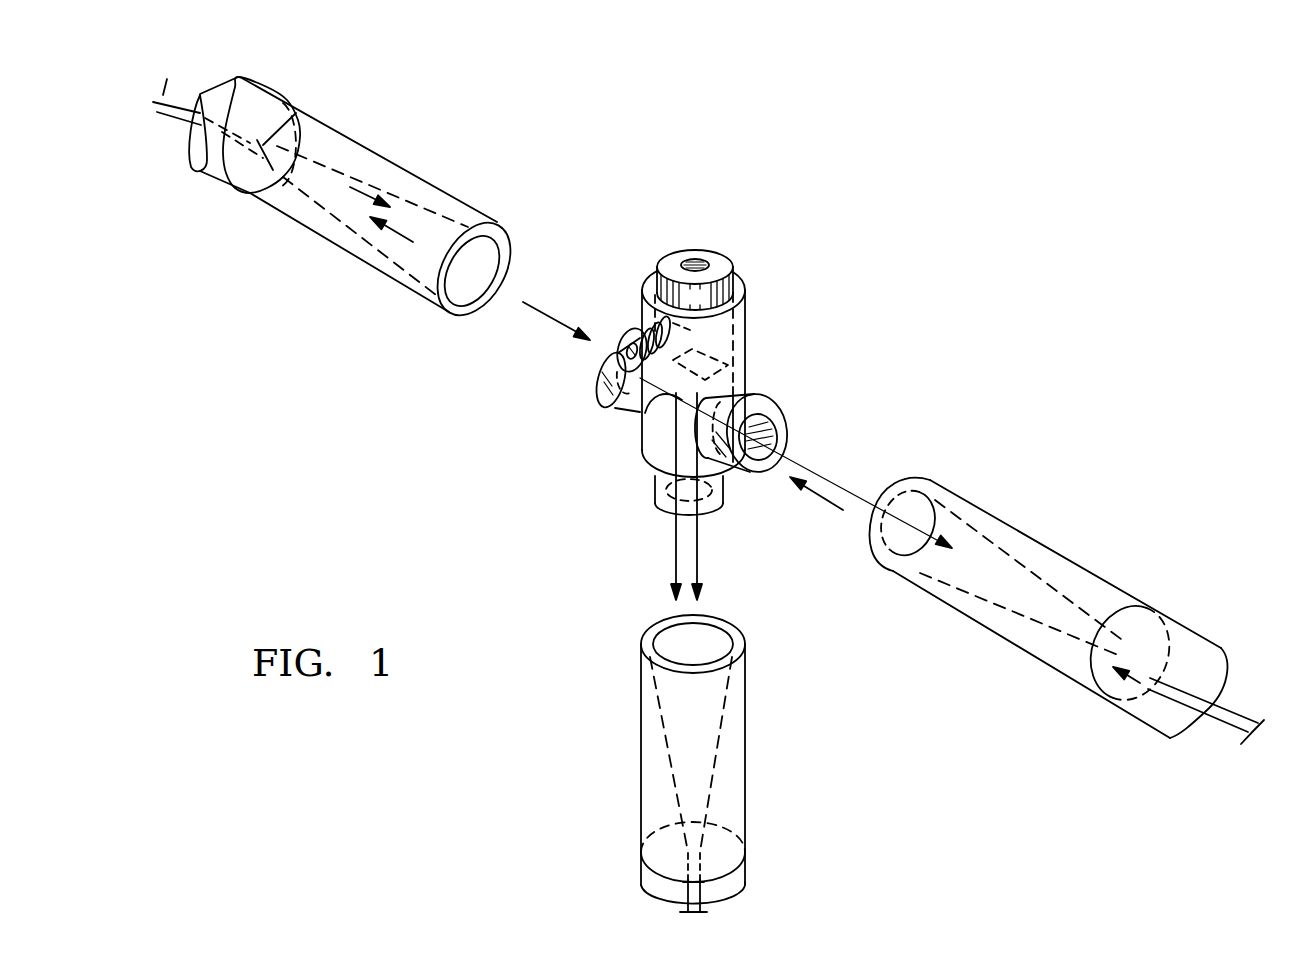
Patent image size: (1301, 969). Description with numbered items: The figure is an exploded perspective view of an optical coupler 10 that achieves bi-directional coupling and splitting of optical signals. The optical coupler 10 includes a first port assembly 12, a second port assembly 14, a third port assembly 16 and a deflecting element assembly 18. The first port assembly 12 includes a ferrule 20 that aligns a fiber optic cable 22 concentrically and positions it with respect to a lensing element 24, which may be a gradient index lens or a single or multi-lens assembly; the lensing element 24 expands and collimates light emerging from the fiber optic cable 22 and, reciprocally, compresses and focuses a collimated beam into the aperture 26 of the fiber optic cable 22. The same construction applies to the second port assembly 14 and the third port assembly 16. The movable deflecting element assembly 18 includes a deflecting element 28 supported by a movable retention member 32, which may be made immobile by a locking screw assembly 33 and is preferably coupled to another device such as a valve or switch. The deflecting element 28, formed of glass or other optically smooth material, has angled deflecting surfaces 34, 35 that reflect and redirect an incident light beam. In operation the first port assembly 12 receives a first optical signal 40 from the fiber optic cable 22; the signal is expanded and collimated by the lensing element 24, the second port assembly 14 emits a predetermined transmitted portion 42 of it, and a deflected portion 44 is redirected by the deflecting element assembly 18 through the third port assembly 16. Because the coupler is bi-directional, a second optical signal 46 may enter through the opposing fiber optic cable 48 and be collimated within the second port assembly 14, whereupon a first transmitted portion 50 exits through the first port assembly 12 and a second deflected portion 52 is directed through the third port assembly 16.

The optical coupler 10 is at (838, 336).
The first port assembly 12 is at (369, 146).
The second port assembly 14 is at (1020, 528).
The third port assembly 16 is at (638, 745).
The deflecting element assembly 18 is at (736, 336).
The ferrule 20 is at (256, 84).
The fiber optic cable 22 is at (183, 102).
The lensing element 24 is at (323, 247).
The aperture 26 is at (296, 113).
The deflecting element 28 is at (676, 383).
The movable retention member 32 is at (738, 362).
The locking screw assembly 33 is at (630, 327).
The deflecting surface 34 is at (688, 392).
The deflecting surface 35 is at (727, 384).
The first optical signal 40 is at (371, 193).
The transmitted portion 42 is at (545, 316).
The deflected portion 44 is at (676, 550).
The second optical signal 46 is at (825, 503).
The opposing fiber optic cable 48 is at (1224, 710).
The first transmitted portion 50 is at (397, 232).
The second deflected portion 52 is at (697, 553).